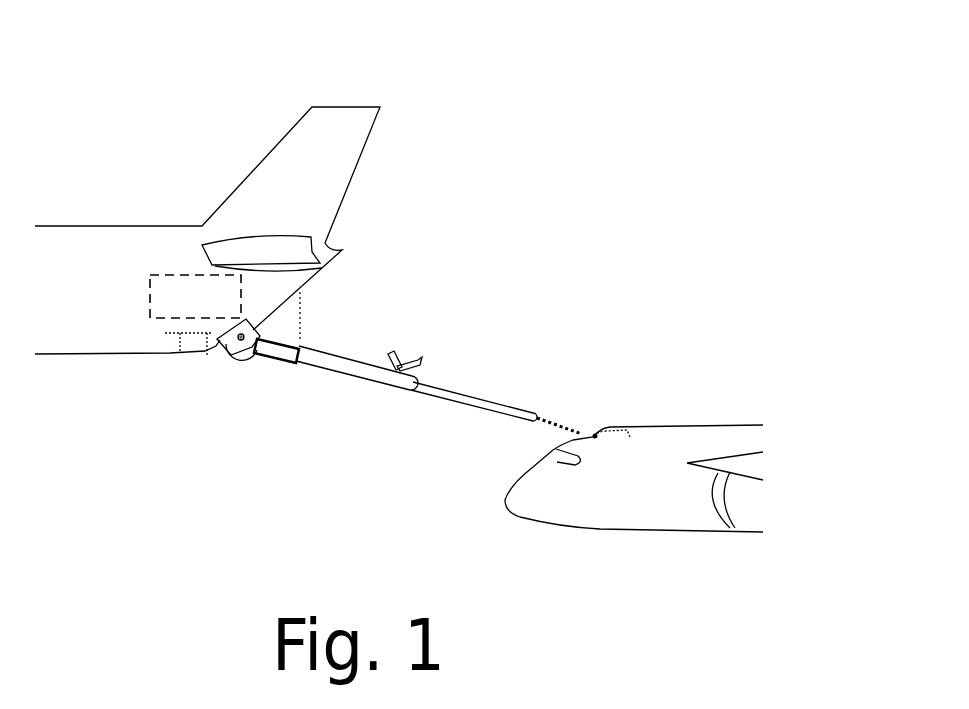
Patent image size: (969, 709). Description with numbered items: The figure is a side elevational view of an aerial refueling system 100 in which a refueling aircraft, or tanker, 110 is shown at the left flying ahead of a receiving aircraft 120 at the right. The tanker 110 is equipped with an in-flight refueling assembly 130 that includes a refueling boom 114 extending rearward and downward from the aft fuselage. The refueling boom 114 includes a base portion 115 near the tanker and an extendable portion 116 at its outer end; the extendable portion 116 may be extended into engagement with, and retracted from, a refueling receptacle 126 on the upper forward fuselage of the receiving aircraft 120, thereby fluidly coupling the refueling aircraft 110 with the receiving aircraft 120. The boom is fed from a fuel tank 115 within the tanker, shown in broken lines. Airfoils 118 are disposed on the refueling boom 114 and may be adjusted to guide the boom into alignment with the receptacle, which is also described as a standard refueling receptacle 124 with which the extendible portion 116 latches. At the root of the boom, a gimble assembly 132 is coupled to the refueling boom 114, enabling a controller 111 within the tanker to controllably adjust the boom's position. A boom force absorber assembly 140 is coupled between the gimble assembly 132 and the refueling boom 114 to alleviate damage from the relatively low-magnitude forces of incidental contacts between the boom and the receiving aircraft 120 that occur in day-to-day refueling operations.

The aerial refueling system 100 is at (582, 66).
The refueling aircraft 110 is at (100, 258).
The controller 111 is at (178, 356).
The refueling boom 114 is at (351, 398).
The base portion 115 is at (195, 274).
The extendable portion 116 is at (440, 378).
The airfoils 118 is at (404, 352).
The receiving aircraft 120 is at (652, 490).
The refueling receptacle 124 is at (595, 434).
The refueling receptacle 126 is at (615, 426).
The in-flight refueling assembly 130 is at (198, 492).
The gimble assembly 132 is at (245, 352).
The boom force absorber assembly 140 is at (275, 362).